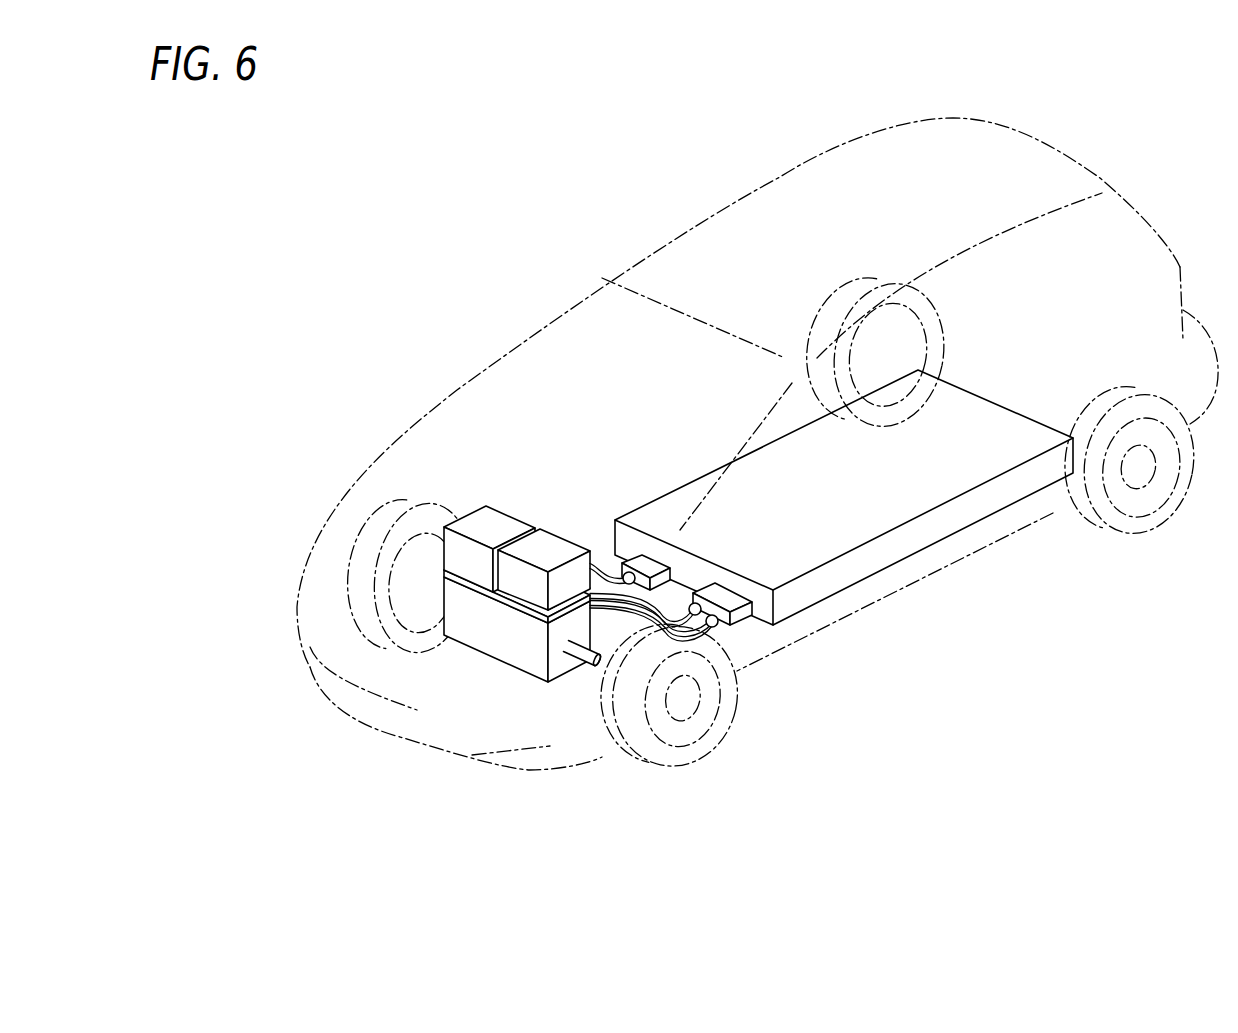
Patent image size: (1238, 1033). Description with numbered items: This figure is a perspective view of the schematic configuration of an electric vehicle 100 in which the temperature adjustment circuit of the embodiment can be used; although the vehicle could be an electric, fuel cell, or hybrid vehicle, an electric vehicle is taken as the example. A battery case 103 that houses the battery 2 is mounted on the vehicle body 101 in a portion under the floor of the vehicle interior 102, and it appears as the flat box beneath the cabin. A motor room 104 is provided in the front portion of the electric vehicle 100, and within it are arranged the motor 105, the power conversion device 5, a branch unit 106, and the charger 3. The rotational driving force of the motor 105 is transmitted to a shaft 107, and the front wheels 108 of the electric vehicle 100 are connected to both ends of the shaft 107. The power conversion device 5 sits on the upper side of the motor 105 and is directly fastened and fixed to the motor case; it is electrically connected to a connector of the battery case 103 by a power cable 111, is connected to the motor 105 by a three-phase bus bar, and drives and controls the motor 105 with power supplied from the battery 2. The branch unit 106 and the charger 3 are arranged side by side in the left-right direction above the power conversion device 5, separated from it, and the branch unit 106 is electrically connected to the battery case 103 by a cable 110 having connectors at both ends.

The electric vehicle 100 is at (647, 223).
The vehicle body 101 is at (767, 177).
The vehicle interior 102 is at (622, 373).
The battery case 103 is at (922, 557).
The motor room 104 is at (423, 473).
The motor 105 is at (472, 630).
The power conversion device 5 is at (517, 612).
The charger 3 is at (493, 515).
The branch unit 106 is at (550, 545).
The shaft 107 is at (583, 668).
The front wheels 108 is at (353, 553).
The cable 110 is at (622, 565).
The power cable 111 is at (678, 634).
The battery 2 is at (937, 465).